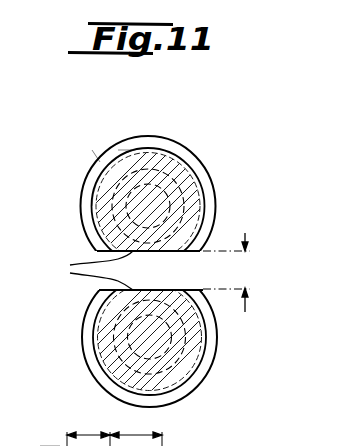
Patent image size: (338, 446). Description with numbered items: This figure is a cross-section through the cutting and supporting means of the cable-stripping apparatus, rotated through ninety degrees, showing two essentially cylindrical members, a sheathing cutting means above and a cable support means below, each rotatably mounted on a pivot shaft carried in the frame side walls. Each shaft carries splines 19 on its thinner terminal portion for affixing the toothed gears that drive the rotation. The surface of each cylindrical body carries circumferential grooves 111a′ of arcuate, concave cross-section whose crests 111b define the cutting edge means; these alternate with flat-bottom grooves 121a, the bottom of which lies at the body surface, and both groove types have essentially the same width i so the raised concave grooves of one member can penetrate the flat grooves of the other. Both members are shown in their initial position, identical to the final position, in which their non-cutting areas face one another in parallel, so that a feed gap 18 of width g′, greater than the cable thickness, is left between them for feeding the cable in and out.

The splines 19 is at (100, 219).
The circumferential grooves 111a′ is at (125, 152).
The crests 111b is at (98, 158).
The feed-out gap 18 is at (183, 272).
The gap width g′ is at (255, 258).
The groove width i is at (114, 427).
The flat-bottom grooves 121a is at (47, 445).